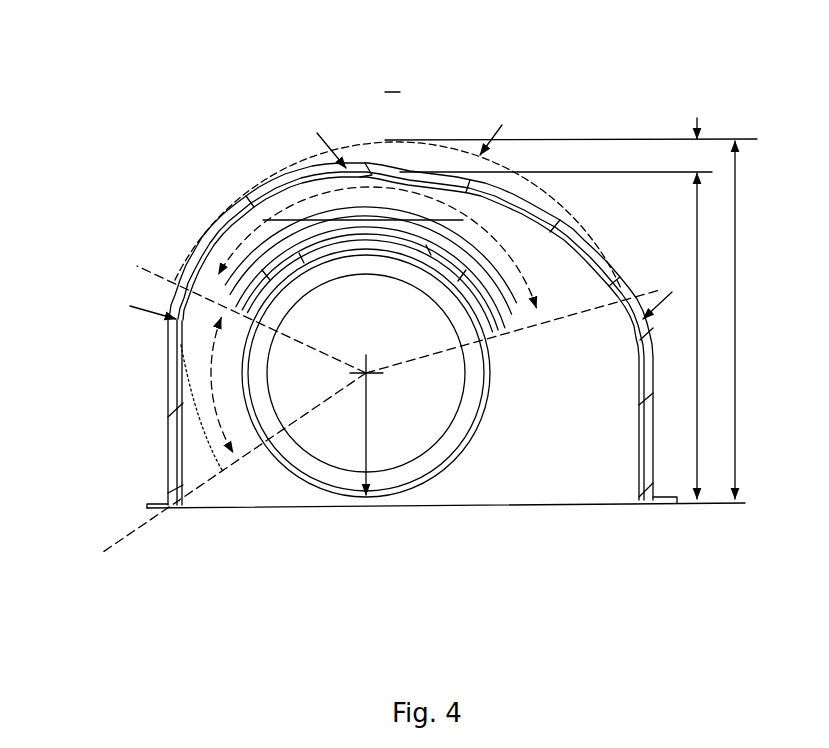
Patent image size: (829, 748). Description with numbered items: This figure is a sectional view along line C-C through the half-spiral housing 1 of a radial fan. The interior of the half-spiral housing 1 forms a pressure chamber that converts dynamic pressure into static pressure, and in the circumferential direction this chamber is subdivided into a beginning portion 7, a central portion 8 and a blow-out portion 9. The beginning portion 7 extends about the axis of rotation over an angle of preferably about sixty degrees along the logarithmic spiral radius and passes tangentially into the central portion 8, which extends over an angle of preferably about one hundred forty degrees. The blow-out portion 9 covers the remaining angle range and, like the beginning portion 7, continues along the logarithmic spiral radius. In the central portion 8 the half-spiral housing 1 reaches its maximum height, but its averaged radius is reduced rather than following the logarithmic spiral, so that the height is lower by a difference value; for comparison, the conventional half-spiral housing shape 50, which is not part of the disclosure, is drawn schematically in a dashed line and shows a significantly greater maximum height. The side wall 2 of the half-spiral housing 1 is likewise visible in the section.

The half-spiral housing 1 is at (171, 76).
The conventional half-spiral housing shape 50 is at (457, 144).
The side wall of housing 2 is at (183, 352).
The central portion 8 is at (139, 270).
The blow-out portion 9 is at (660, 291).
The beginning portion 7 is at (107, 553).